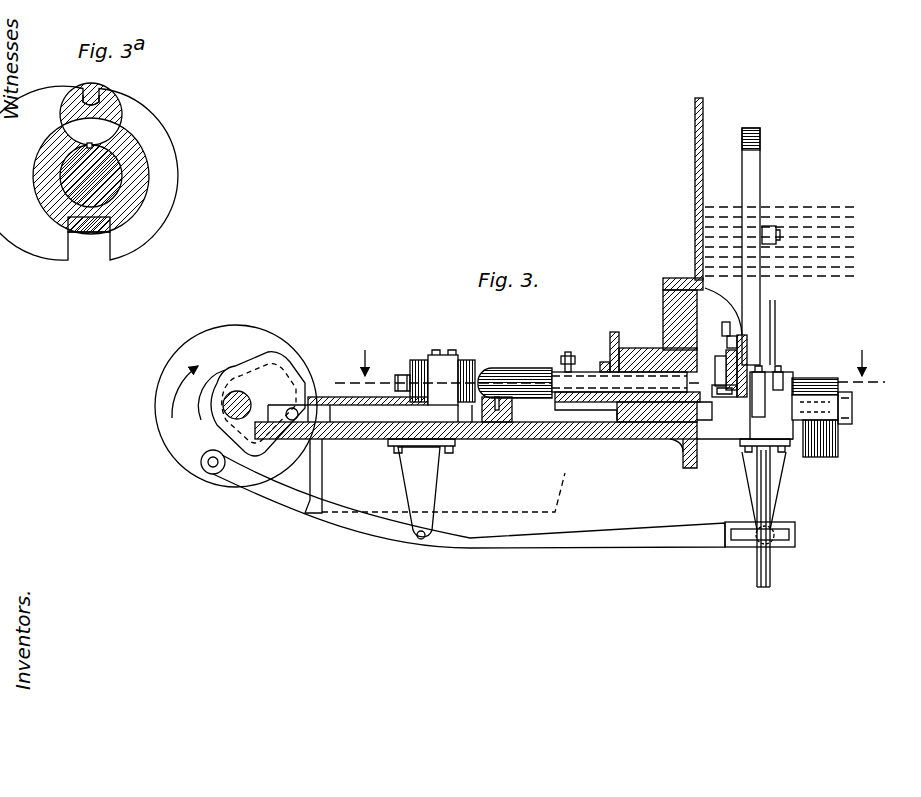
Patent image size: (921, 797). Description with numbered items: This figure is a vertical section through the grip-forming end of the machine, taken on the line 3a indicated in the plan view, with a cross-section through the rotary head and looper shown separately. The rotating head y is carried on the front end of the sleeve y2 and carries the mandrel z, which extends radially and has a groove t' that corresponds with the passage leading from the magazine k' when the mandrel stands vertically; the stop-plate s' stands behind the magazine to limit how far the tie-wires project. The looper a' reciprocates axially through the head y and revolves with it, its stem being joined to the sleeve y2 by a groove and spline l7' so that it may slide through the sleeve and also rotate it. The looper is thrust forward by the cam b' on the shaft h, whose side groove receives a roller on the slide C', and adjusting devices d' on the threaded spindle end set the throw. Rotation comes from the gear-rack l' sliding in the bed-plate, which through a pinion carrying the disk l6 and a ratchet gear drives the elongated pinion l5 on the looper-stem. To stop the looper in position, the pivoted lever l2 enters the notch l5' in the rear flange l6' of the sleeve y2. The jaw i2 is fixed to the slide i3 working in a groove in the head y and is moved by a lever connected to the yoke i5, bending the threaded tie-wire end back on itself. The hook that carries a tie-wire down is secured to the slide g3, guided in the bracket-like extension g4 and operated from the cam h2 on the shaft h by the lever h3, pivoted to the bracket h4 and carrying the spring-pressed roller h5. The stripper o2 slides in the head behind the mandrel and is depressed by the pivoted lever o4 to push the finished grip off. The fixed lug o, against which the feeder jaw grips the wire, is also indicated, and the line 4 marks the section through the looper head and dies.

In FIG. 3A, the notch l5' is at (83, 82).
In FIG. 3A, the rear flange l6' is at (89, 173).
In FIG. 3A, the groove and spline l7' is at (66, 126).
In FIG. 3A, the looper a' is at (139, 176).
In FIG. 3, the looper a' is at (710, 426).
In FIG. 3A, the sleeve y2 is at (140, 190).
In FIG. 3, the sleeve y2 is at (623, 348).
In FIG. 3A, the slide i3 is at (88, 233).
In FIG. 3, the slide i3 is at (685, 445).
In FIG. 3, the section line 4 is at (616, 373).
In FIG. 3, the cam b' is at (227, 406).
In FIG. 3, the cam h2 is at (253, 390).
In FIG. 3, the shaft h is at (225, 405).
In FIG. 3, the roller h5 is at (205, 458).
In FIG. 3, the lever h3 is at (518, 545).
In FIG. 3, the bracket h4 is at (427, 486).
In FIG. 3, the slide C' is at (524, 459).
In FIG. 3, the adjusting devices d' is at (547, 367).
In FIG. 3, the gear-rack l' is at (410, 436).
In FIG. 3, the pinion l5 is at (582, 361).
In FIG. 3, the yoke i5 is at (562, 362).
In FIG. 3, the pivoted lever l2 is at (608, 336).
In FIG. 3, the disk l6 is at (596, 355).
In FIG. 3, the block 3a is at (641, 350).
In FIG. 3, the stop-plate s' is at (685, 189).
In FIG. 3, the fixed lug o is at (738, 177).
In FIG. 3, the magazine k' is at (781, 246).
In FIG. 3, the pivoted lever o4 is at (730, 325).
In FIG. 3, the stripper o2 is at (737, 339).
In FIG. 3, the groove t' is at (785, 361).
In FIG. 3, the mandrel z is at (738, 358).
In FIG. 3, the rotating head y is at (714, 355).
In FIG. 3, the jaw i2 is at (740, 395).
In FIG. 3, the slide g3 is at (762, 503).
In FIG. 3, the bracket-like extension g4 is at (770, 580).